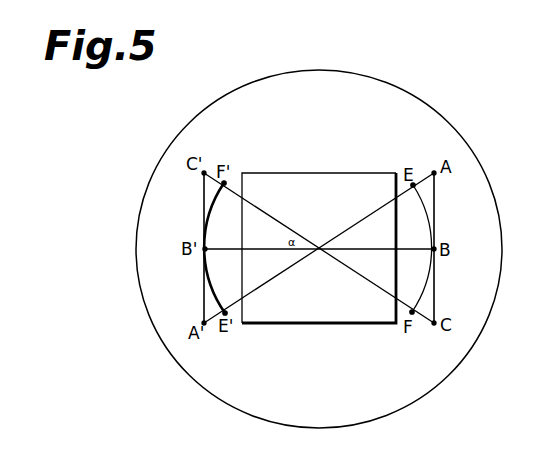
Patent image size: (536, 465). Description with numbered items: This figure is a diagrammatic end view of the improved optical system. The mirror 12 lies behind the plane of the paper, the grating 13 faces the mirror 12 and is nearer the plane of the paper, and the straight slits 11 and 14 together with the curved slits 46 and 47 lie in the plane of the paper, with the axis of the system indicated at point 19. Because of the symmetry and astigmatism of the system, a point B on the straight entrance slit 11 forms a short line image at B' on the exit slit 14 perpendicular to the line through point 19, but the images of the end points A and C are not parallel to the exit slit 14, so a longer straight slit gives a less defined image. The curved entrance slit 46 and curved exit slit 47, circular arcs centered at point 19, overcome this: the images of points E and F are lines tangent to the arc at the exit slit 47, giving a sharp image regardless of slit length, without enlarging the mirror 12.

The straight entrance slit 11 is at (433, 307).
The mirror 12 is at (428, 113).
The grating 13 is at (317, 322).
The straight exit slit 14 is at (203, 203).
The axis of the system 19 is at (319, 250).
The curved entrance slit 46 is at (430, 280).
The curved exit slit 47 is at (208, 287).